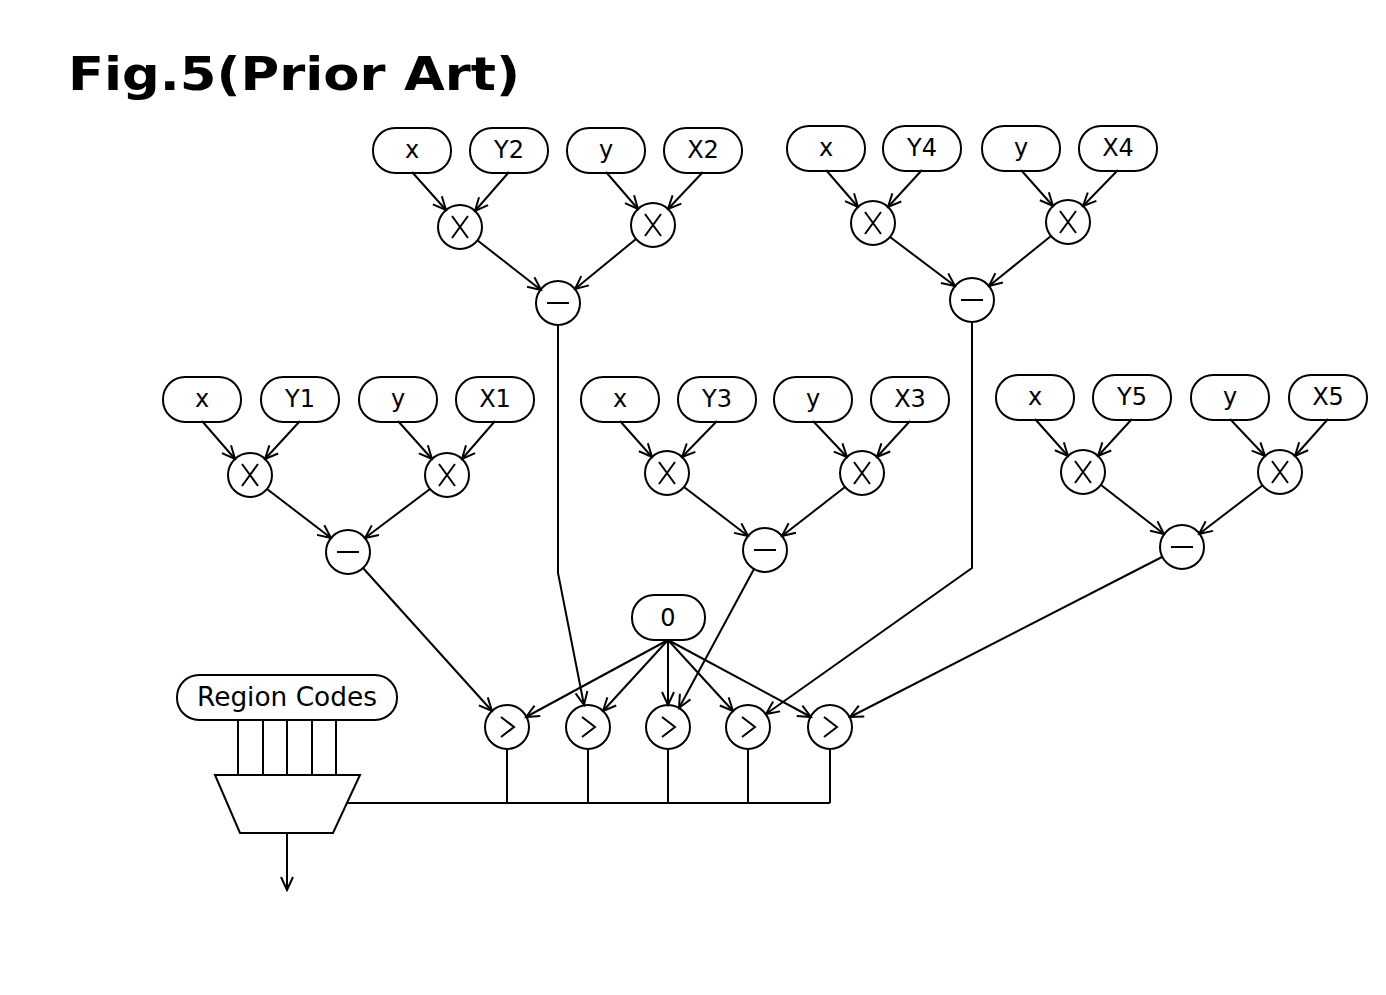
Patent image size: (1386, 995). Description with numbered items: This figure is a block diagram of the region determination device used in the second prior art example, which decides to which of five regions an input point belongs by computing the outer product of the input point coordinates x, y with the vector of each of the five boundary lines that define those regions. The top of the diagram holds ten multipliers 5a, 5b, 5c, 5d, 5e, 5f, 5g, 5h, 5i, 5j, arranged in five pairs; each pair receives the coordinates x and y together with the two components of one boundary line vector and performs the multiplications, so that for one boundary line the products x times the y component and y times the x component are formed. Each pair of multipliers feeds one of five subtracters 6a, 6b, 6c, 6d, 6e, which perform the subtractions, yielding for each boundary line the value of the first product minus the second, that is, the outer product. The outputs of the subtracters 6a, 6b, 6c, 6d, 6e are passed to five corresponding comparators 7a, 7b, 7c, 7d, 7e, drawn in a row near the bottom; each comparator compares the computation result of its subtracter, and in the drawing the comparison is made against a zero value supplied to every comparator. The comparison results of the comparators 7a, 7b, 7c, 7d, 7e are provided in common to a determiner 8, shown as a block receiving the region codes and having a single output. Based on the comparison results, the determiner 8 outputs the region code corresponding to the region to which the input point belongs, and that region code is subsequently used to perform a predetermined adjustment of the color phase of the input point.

The multiplier 5a is at (232, 488).
The multiplier 5b is at (465, 489).
The multiplier 5c is at (438, 233).
The multiplier 5d is at (671, 239).
The multiplier 5e is at (649, 486).
The multiplier 5f is at (880, 487).
The multiplier 5g is at (851, 228).
The multiplier 5h is at (1090, 225).
The multiplier 5i is at (1065, 485).
The multiplier 5j is at (1298, 486).
The subtracter 6a is at (348, 530).
The subtracter 6b is at (558, 281).
The subtracter 6c is at (765, 528).
The subtracter 6d is at (972, 278).
The subtracter 6e is at (1182, 525).
The comparator 7a is at (493, 744).
The comparator 7b is at (574, 744).
The comparator 7c is at (654, 744).
The comparator 7d is at (734, 744).
The comparator 7e is at (816, 744).
The determiner 8 is at (227, 805).